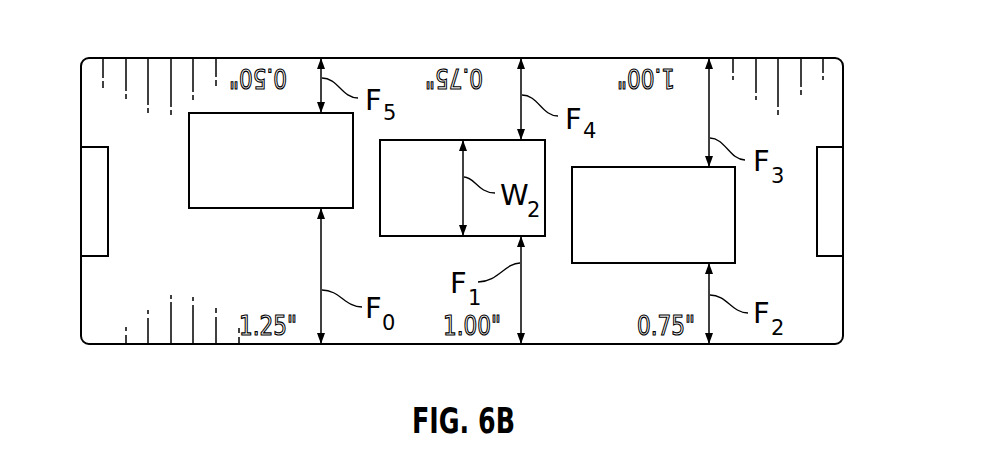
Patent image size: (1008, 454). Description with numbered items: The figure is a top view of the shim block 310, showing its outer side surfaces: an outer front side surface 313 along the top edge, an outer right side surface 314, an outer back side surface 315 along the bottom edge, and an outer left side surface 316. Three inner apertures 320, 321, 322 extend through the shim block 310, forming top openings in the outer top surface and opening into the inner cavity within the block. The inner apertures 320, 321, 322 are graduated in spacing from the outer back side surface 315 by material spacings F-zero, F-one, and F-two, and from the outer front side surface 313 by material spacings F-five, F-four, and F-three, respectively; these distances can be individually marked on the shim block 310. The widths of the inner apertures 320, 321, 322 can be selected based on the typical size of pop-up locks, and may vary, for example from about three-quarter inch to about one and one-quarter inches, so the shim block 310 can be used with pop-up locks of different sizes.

The shim block 310 is at (461, 203).
The outer front side surface 313 is at (203, 58).
The outer right side surface 314 is at (845, 92).
The outer back side surface 315 is at (160, 344).
The outer left side surface 316 is at (81, 103).
The inner aperture 320 is at (219, 195).
The inner aperture 321 is at (417, 223).
The inner aperture 322 is at (614, 250).